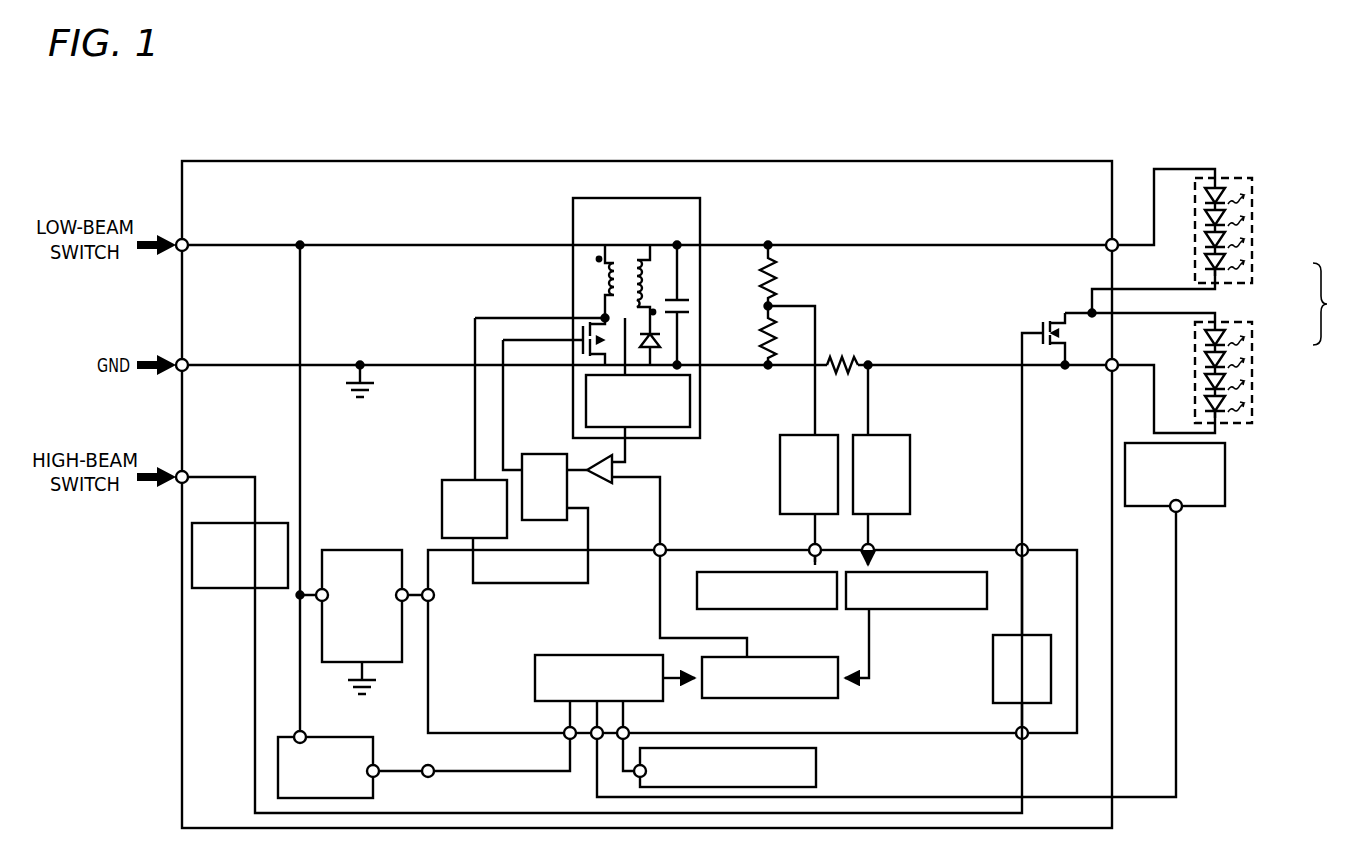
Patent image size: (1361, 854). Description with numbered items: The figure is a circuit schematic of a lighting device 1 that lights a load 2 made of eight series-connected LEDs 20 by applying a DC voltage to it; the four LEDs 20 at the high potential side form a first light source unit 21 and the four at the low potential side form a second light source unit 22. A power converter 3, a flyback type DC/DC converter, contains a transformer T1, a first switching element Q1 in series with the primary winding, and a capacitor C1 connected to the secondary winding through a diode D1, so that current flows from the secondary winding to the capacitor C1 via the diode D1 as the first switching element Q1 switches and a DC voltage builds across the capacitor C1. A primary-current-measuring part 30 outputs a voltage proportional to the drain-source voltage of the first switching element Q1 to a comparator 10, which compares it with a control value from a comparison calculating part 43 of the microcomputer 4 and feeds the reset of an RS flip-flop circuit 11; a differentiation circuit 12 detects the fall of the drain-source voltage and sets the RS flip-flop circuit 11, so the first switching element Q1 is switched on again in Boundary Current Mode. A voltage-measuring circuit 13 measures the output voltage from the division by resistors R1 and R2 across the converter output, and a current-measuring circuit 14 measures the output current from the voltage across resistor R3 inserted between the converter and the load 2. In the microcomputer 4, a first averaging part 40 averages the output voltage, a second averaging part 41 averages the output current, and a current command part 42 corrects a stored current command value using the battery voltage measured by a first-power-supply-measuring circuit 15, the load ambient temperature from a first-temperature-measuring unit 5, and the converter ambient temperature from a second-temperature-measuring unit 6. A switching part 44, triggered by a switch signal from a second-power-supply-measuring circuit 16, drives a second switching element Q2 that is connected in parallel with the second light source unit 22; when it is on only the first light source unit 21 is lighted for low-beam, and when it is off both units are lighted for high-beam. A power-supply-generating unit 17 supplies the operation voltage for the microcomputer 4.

The lighting device 1 is at (941, 158).
The load 2 is at (1270, 278).
The power converter 3 is at (573, 222).
The microcomputer 4 is at (1057, 546).
The first-temperature-measuring unit 5 is at (1222, 492).
The second-temperature-measuring unit 6 is at (816, 767).
The comparator 10 is at (603, 485).
The RS flip-flop circuit 11 is at (557, 460).
The differentiation circuit 12 is at (449, 486).
The voltage-measuring circuit 13 is at (800, 432).
The current-measuring circuit 14 is at (889, 432).
The first-power-supply-measuring circuit 15 is at (375, 748).
The second-power-supply-measuring circuit 16 is at (195, 566).
The power-supply-generating unit 17 is at (367, 562).
The LED 20 is at (1219, 190).
The first light source unit 21 is at (1250, 215).
The second light source unit 22 is at (1256, 342).
The primary-current-measuring part 30 is at (596, 398).
The first averaging part 40 is at (788, 604).
The second averaging part 41 is at (915, 604).
The current command part 42 is at (540, 666).
The comparison calculating part 43 is at (840, 694).
The switching part 44 is at (993, 674).
The transformer T1 is at (621, 258).
The first switching element Q1 is at (580, 326).
The second switching element Q2 is at (1049, 331).
The capacitor C1 is at (690, 302).
The diode D1 is at (662, 340).
The resistor R1 is at (784, 274).
The resistor R2 is at (784, 336).
The resistor R3 is at (849, 351).